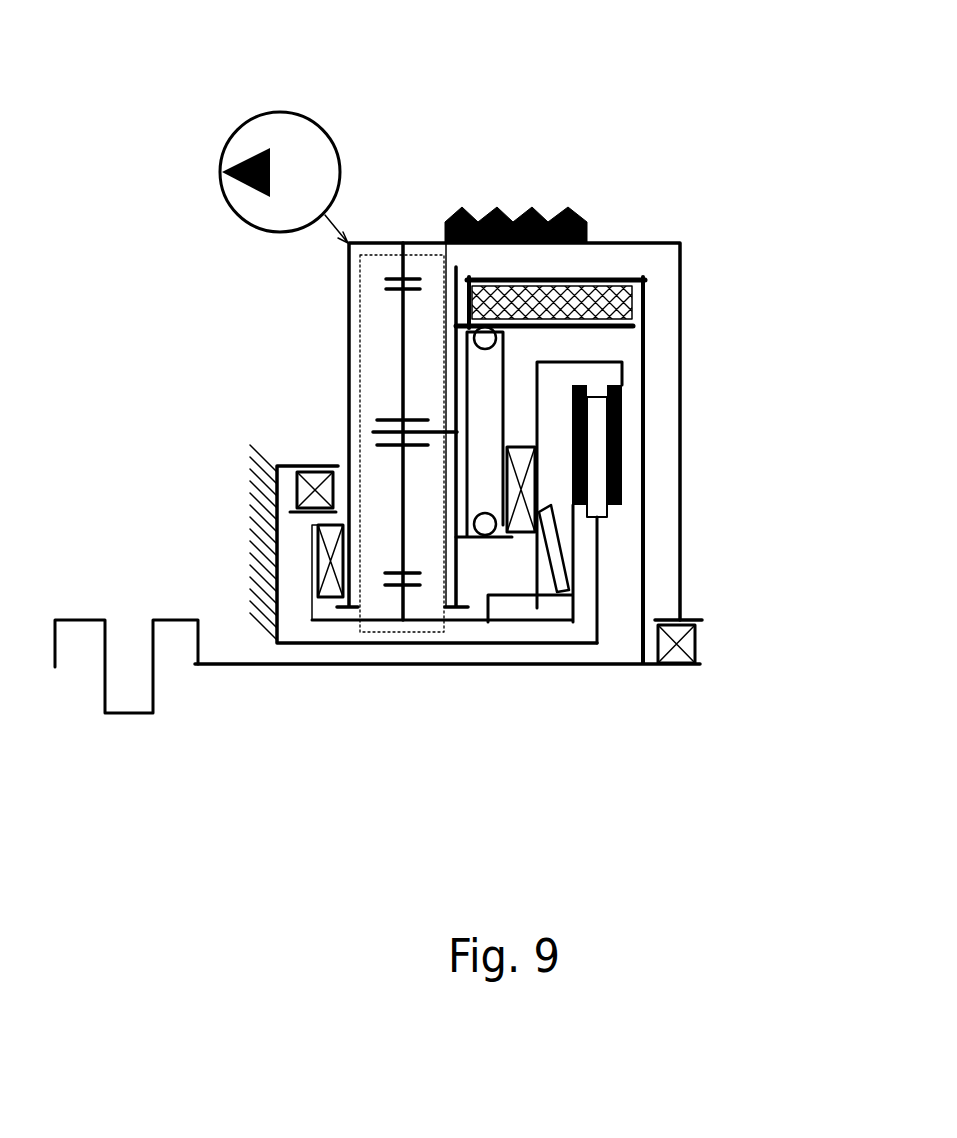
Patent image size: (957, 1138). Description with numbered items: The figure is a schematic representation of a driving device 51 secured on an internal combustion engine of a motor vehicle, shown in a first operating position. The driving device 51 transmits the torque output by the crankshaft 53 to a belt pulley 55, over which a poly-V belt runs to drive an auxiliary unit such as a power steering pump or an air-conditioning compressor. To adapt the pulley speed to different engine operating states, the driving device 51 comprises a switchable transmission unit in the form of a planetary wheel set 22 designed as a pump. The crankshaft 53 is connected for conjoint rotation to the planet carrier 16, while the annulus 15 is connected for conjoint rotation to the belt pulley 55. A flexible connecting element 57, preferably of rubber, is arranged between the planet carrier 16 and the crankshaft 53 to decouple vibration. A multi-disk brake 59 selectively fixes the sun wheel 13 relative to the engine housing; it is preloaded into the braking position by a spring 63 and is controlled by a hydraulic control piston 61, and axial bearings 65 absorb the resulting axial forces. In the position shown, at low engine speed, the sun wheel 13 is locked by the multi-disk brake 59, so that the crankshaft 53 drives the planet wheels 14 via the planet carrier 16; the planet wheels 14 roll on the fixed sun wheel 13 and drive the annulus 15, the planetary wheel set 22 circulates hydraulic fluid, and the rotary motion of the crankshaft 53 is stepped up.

The driving device 51 is at (459, 85).
The planetary wheel set 22 is at (380, 333).
The planet wheels 14 is at (402, 384).
The annulus 15 is at (405, 268).
The planet carrier 16 is at (437, 430).
The sun wheel 13 is at (403, 602).
The belt pulley 55 is at (578, 208).
The flexible connecting element 57 is at (601, 300).
The hydraulic control piston 61 is at (485, 372).
The multi-disk brake 59 is at (600, 433).
The spring 63 is at (560, 568).
The axial bearings 65 is at (330, 583).
The crankshaft 53 is at (160, 617).